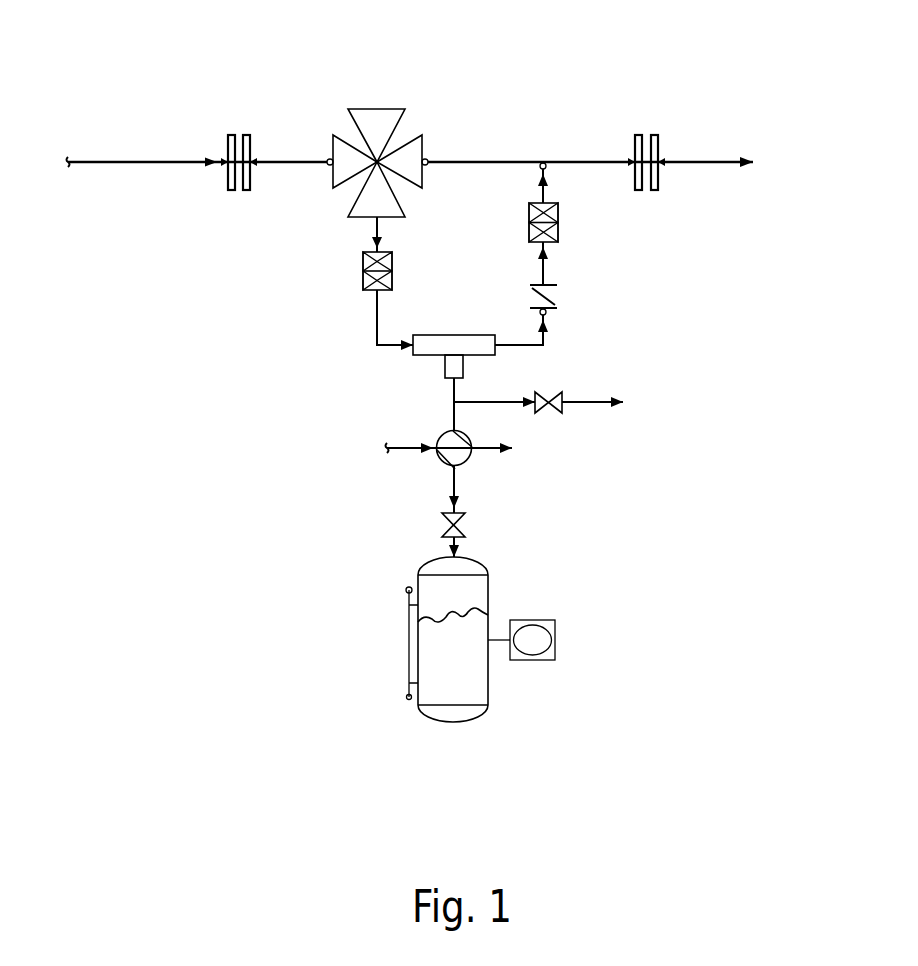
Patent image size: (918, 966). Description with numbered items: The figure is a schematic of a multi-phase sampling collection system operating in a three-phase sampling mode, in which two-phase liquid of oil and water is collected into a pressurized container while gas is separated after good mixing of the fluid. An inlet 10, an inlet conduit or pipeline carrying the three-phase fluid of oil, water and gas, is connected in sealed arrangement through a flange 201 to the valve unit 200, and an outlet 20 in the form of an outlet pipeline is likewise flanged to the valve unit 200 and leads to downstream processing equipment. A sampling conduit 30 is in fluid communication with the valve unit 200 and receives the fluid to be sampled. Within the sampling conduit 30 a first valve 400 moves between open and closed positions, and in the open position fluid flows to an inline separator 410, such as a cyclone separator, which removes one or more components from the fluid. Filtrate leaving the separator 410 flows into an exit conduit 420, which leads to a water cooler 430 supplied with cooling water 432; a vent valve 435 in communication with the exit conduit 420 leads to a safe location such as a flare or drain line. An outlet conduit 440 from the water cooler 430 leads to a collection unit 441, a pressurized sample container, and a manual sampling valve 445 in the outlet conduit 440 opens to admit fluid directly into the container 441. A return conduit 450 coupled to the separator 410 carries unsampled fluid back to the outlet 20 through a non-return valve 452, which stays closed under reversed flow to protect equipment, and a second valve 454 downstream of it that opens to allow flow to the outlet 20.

The inlet 10 is at (105, 160).
The outlet 20 is at (698, 158).
The valve unit 200 is at (374, 97).
The flange 201 is at (233, 122).
The sampling conduit 30 is at (375, 320).
The first valve 400 is at (363, 263).
The inline separator 410 is at (455, 333).
The exit conduit 420 is at (450, 392).
The water cooler 430 is at (465, 465).
The cooling water 432 is at (424, 447).
The vent valve 435 is at (572, 388).
The outlet conduit 440 is at (450, 483).
The collection unit 441 is at (445, 722).
The manual sampling valve 445 is at (470, 530).
The return conduit 450 is at (548, 337).
The non-return valve 452 is at (583, 291).
The second valve 454 is at (583, 221).